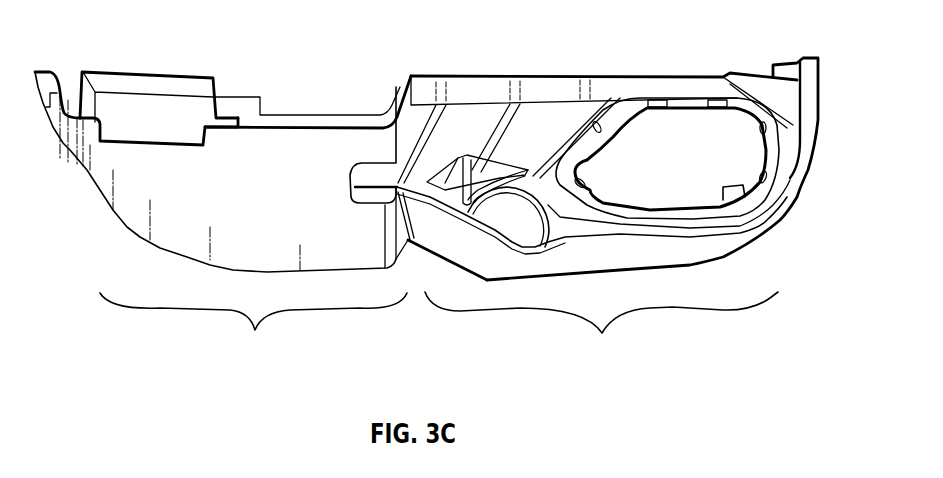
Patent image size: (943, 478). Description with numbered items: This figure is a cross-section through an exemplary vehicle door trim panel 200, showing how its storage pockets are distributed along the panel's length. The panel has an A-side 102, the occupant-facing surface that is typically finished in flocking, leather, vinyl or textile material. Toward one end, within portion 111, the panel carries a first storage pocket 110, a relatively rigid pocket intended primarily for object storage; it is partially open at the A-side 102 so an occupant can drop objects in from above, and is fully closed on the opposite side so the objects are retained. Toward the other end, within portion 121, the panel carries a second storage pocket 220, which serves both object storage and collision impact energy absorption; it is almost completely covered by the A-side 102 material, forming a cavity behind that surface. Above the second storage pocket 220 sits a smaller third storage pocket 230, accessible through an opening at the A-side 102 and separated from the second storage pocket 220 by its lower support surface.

The vehicle door trim panel 200 is at (112, 36).
The third storage pocket 230 is at (168, 125).
The second storage pocket 220 is at (378, 172).
The first storage pocket 110 is at (601, 208).
The A-side 102 is at (250, 252).
The portion 121 is at (253, 326).
The portion 111 is at (601, 327).